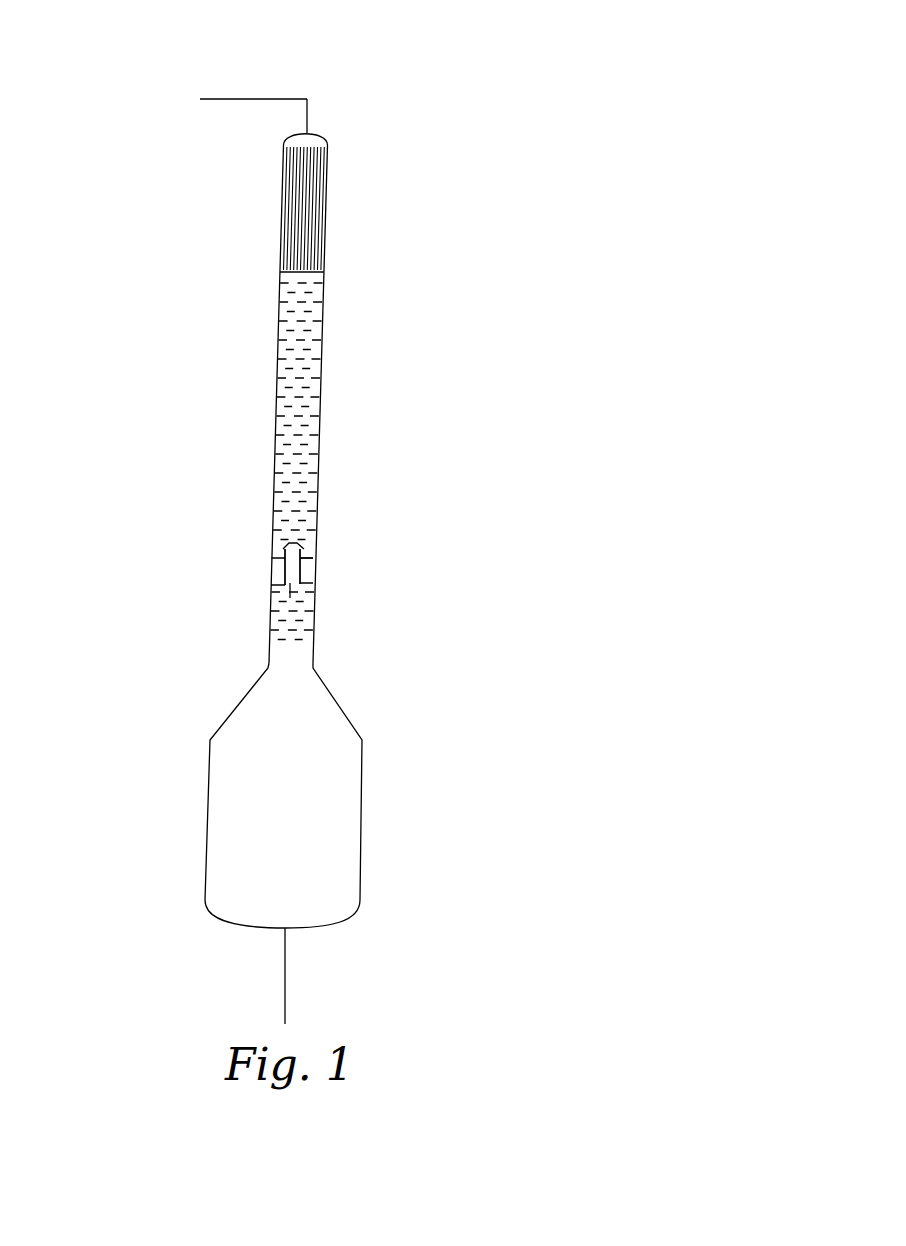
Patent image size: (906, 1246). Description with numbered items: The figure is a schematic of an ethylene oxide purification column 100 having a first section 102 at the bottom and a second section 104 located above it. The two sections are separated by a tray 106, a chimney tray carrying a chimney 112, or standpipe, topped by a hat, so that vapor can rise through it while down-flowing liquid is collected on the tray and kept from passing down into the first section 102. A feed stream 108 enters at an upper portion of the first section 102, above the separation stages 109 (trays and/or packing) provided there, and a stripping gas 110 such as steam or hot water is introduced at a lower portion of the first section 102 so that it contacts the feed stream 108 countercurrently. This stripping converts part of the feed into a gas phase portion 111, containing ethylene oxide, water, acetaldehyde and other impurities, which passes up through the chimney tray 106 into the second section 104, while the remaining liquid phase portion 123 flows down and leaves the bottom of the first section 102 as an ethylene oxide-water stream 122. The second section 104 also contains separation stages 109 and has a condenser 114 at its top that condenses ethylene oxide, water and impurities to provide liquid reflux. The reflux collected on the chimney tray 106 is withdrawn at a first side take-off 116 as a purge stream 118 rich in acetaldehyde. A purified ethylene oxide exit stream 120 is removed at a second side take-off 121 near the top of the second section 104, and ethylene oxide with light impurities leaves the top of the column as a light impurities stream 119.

The ethylene oxide purification column 100 is at (470, 58).
The first section 102 is at (362, 792).
The second section 104 is at (318, 446).
The tray 106 is at (302, 587).
The feed stream 108 is at (269, 593).
The separation stages 109 is at (285, 371).
The stripping gas 110 is at (363, 877).
The gas phase portion of the feed stream 111 is at (294, 597).
The chimney 112 is at (303, 556).
The condenser 114 is at (329, 170).
The first side take-off 116 is at (315, 572).
The purge stream 118 is at (313, 575).
The light impurities stream 119 is at (240, 99).
The purified ethylene oxide exit stream 120 is at (323, 312).
The second side take-off 121 is at (323, 306).
The ethylene oxide-water stream 122 is at (285, 1024).
The liquid phase portion 123 is at (284, 812).